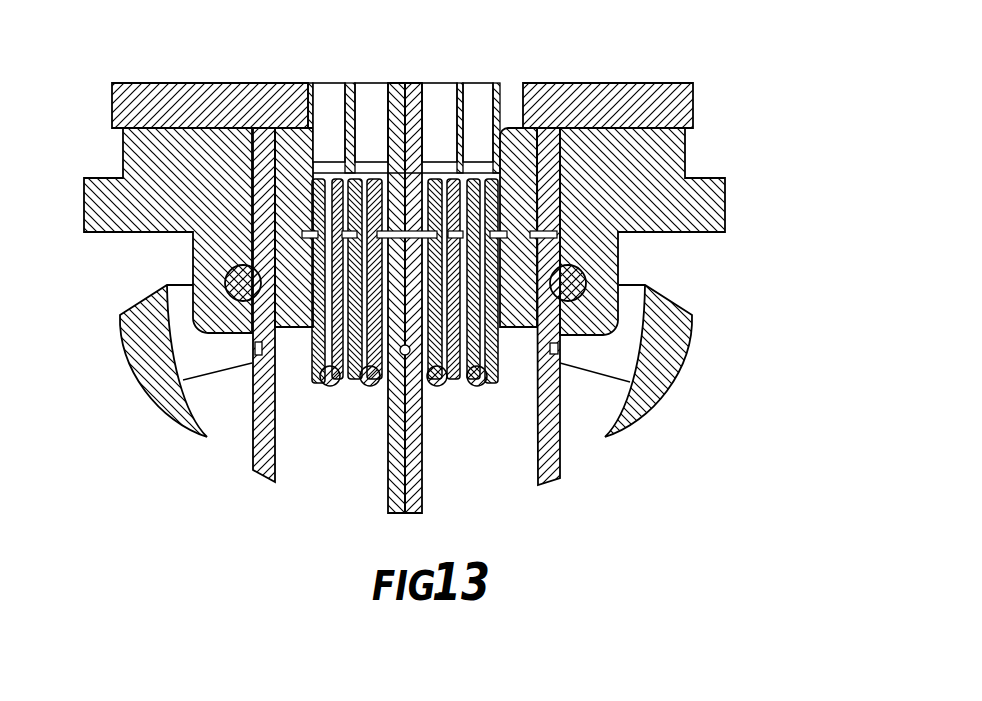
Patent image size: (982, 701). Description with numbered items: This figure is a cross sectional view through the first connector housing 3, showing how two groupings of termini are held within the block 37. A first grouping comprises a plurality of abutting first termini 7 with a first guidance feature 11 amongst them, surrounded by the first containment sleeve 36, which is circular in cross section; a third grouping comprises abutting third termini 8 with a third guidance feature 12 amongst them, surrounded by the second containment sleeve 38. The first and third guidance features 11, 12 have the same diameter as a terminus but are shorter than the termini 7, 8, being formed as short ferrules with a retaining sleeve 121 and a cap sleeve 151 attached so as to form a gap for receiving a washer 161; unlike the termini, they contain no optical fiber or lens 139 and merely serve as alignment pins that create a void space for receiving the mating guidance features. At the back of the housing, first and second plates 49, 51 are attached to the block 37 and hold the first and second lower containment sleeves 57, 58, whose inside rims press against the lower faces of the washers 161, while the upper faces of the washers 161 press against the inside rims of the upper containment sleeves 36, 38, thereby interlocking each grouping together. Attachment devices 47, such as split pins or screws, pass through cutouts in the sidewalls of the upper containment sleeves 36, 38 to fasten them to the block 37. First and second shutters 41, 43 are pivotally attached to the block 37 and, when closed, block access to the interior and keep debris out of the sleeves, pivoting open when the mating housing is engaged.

The first connector housing 3 is at (804, 127).
The first plate 49 is at (124, 110).
The second plate 51 is at (690, 85).
The block 37 is at (102, 200).
The third guidance feature 12 is at (520, 328).
The first guidance feature 11 is at (297, 110).
The first containment sleeve 36 is at (257, 443).
The second containment sleeve 38 is at (548, 447).
The attachment device 47 is at (233, 277).
The first shutter 41 is at (150, 353).
The second shutter 43 is at (675, 331).
The retaining sleeve 121 is at (311, 110).
The cap sleeve 151 is at (313, 358).
The lens 139 is at (341, 387).
The first termini 7 is at (357, 404).
The third termini 8 is at (457, 404).
The first lower containment sleeve 57 is at (397, 86).
The second lower containment sleeve 58 is at (406, 85).
The washer 161 is at (300, 233).